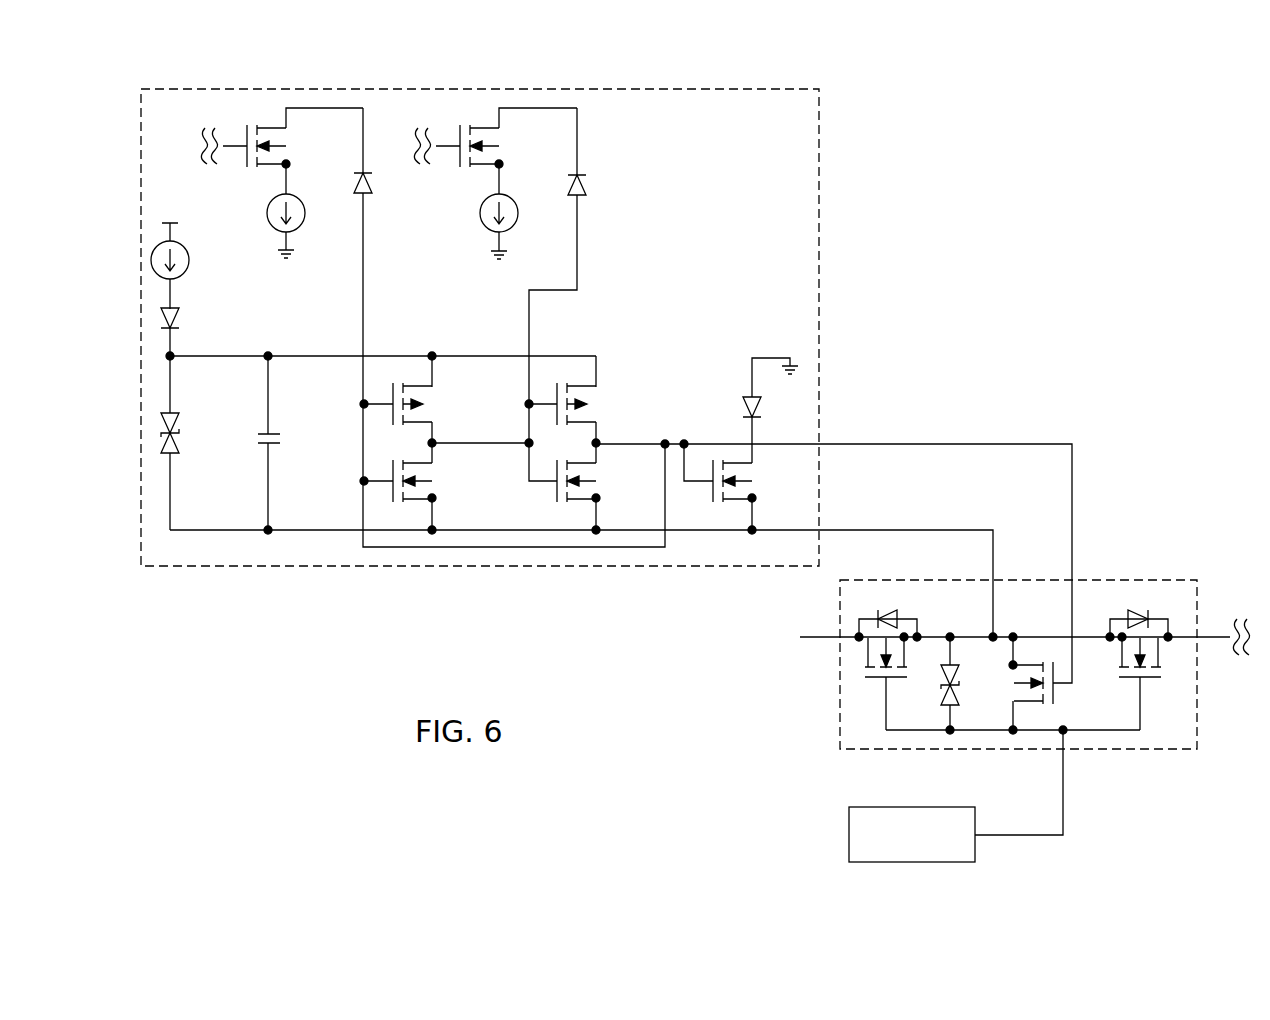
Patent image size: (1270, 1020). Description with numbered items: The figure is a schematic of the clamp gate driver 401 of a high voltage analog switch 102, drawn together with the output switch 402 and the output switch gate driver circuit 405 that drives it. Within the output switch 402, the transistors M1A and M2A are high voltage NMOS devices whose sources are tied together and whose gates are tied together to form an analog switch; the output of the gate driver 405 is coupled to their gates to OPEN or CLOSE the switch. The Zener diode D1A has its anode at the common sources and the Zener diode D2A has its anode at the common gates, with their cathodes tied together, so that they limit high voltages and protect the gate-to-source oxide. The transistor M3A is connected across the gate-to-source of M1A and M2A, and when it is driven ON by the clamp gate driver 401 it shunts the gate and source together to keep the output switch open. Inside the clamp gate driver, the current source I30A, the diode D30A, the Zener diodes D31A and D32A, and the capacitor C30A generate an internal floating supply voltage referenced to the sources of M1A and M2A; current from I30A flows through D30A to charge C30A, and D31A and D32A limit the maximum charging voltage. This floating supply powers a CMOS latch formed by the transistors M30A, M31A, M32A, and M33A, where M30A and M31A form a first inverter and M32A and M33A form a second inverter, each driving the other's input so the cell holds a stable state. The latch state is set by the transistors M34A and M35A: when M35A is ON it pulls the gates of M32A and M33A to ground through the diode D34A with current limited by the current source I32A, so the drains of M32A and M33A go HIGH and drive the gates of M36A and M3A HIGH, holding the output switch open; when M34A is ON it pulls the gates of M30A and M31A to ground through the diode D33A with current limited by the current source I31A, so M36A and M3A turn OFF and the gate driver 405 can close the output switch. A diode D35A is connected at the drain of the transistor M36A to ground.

The high voltage analog switch 102 is at (1068, 140).
The clamp gate driver 401 is at (300, 88).
The output switch SWA 402 is at (1095, 752).
The output switch gate driver circuit 405 is at (866, 806).
The transistor M34A is at (282, 138).
The transistor M35A is at (495, 138).
The current source I30A is at (191, 275).
The current source I31A is at (307, 211).
The current source I32A is at (520, 211).
The diode D30A is at (194, 332).
The Zener diode D31A is at (194, 428).
The Zener diode D32A is at (199, 484).
The diode D33A is at (509, 327).
The diode D34A is at (581, 294).
The diode D35A is at (776, 387).
The capacitor C30A is at (291, 443).
The transistor M30A is at (420, 401).
The transistor M31A is at (420, 486).
The transistor M32A is at (602, 401).
The transistor M33A is at (602, 487).
The transistor M36A is at (758, 473).
The transistor M1A is at (888, 659).
The transistor M2A is at (1139, 659).
The transistor M3A is at (1052, 681).
The Zener diode D1A is at (970, 669).
The Zener diode D2A is at (975, 710).